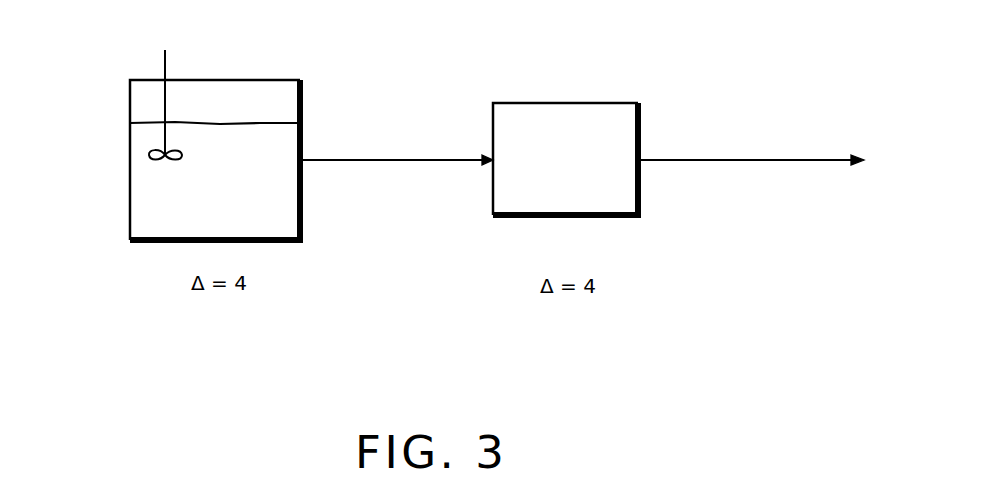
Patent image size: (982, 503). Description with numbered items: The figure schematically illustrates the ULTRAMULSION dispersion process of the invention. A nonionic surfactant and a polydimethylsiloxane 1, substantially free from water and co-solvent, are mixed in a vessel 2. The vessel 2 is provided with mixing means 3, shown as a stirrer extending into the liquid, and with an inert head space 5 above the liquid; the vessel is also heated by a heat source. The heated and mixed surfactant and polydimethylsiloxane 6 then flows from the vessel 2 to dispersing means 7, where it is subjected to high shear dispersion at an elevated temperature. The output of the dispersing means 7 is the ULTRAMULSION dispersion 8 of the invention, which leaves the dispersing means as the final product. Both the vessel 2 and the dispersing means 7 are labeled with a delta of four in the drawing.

The nonionic surfactant and polydimethylsiloxane 1 is at (219, 185).
The vessel 2 is at (285, 153).
The mixing means 3 is at (162, 100).
The inert head space 5 is at (231, 95).
The heated and mixed surfactant and polydimethylsiloxane 6 is at (410, 157).
The dispersing means 7 is at (578, 102).
The ULTRAMULSION dispersion 8 is at (722, 160).